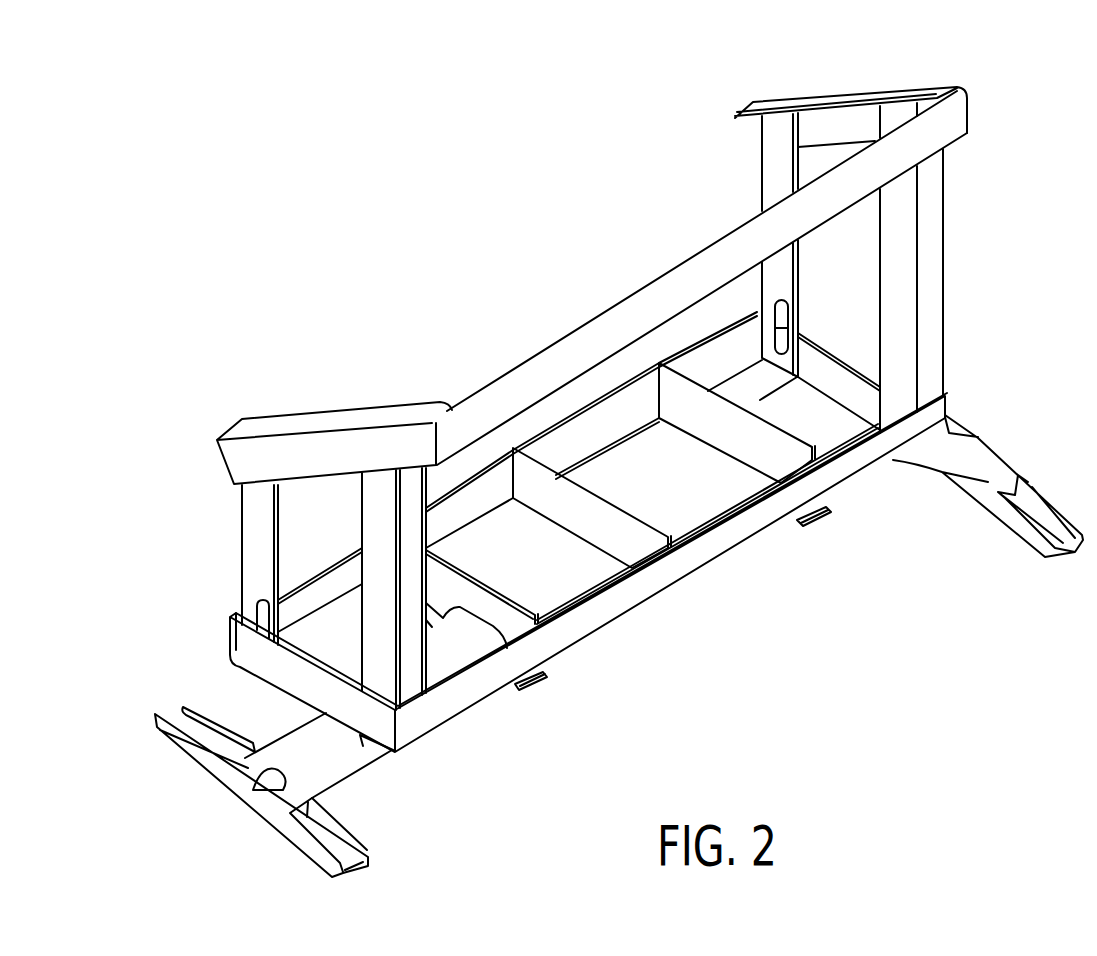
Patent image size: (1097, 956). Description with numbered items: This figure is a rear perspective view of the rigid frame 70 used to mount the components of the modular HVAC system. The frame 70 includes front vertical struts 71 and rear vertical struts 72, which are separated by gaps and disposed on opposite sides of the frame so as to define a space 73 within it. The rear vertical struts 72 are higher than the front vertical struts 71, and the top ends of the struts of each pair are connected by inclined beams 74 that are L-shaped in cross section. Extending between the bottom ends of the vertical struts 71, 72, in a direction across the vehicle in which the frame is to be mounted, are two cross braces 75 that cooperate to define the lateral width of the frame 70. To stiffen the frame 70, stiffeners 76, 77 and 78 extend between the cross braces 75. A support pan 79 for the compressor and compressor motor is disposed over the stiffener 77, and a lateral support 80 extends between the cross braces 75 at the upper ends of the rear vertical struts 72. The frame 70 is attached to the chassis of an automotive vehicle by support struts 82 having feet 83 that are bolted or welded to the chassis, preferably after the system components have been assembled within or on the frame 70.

The frame 70 is at (962, 238).
The front vertical struts 71 is at (775, 143).
The rear vertical struts 72 is at (932, 303).
The space 73 is at (290, 552).
The inclined beams 74 is at (822, 103).
The cross braces 75 is at (630, 408).
The stiffener 76 is at (838, 373).
The stiffener 77 is at (532, 690).
The stiffener 78 is at (818, 519).
The support pan 79 is at (573, 592).
The lateral support 80 is at (672, 280).
The support struts 82 is at (343, 768).
The feet 83 is at (347, 845).